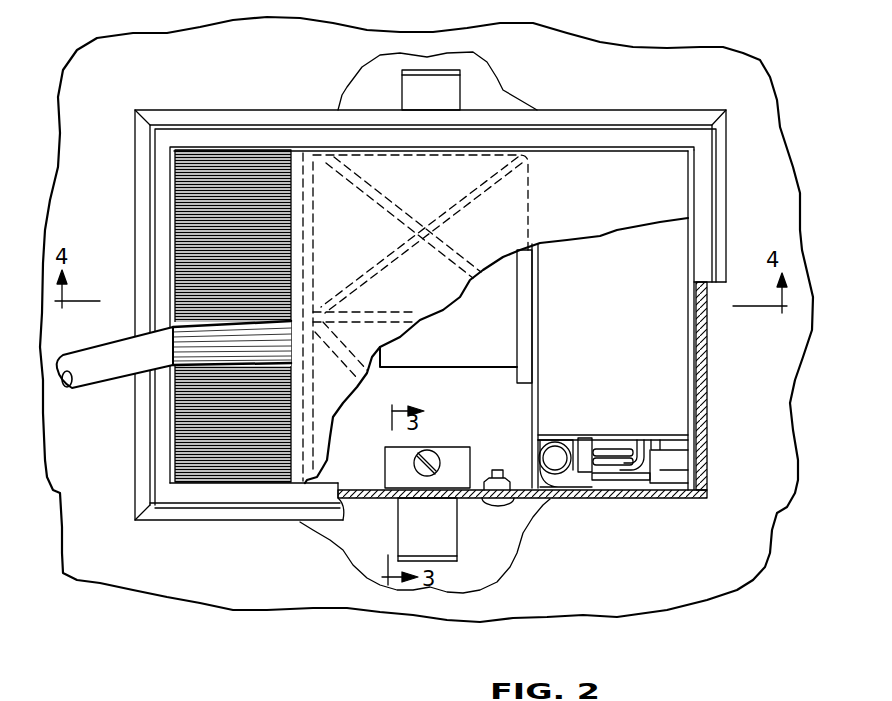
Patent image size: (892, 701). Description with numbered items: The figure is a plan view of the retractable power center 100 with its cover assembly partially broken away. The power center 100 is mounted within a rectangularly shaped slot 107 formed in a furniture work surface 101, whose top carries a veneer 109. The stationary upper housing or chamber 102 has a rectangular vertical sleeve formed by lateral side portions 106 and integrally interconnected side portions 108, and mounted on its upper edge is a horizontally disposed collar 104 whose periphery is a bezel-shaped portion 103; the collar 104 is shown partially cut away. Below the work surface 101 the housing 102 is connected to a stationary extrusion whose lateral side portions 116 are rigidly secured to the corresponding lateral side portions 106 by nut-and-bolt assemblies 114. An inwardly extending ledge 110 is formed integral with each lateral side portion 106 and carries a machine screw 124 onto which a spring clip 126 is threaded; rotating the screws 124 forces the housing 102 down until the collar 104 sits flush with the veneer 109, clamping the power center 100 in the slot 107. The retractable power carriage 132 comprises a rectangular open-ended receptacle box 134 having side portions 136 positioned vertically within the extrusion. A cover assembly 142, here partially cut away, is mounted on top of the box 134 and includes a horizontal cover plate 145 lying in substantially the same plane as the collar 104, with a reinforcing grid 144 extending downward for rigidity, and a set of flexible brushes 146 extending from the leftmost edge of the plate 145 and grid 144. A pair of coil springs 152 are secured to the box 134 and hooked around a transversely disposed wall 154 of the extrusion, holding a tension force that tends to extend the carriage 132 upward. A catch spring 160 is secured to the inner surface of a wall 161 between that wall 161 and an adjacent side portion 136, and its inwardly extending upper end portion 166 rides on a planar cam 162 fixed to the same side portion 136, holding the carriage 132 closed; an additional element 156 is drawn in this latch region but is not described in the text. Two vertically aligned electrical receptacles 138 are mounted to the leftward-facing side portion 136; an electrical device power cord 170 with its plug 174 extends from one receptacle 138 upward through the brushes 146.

The power center 100 is at (764, 56).
The work surface 101 is at (133, 33).
The upper housing 102 is at (642, 150).
The bezel-shaped portion 103 is at (135, 193).
The collar 104 is at (589, 108).
The lateral side portion 106 is at (597, 499).
The slot 107 is at (303, 700).
The side portion 108 is at (707, 418).
The veneer 109 is at (237, 72).
The ledge 110 is at (461, 457).
The nut-and-bolt assembly 114 is at (495, 508).
The lateral side portion 116 is at (360, 484).
The machine screw 124 is at (429, 451).
The spring clip 126 is at (461, 95).
The power carriage 132 is at (670, 325).
The receptacle box 134 is at (612, 311).
The side portion 136 is at (563, 431).
The electrical receptacle 138 is at (519, 380).
The cover assembly 142 is at (631, 236).
The reinforcing grid 144 is at (314, 202).
The cover plate 145 is at (625, 203).
The brushes 146 is at (297, 165).
The coil spring 152 is at (556, 466).
The wall 154 is at (582, 436).
The spring 156 is at (594, 447).
The catch spring 160 is at (633, 462).
The wall 161 is at (638, 474).
The cam 162 is at (653, 443).
The upper end portion 166 is at (641, 439).
The power cord 170 is at (98, 378).
The plug 174 is at (404, 369).